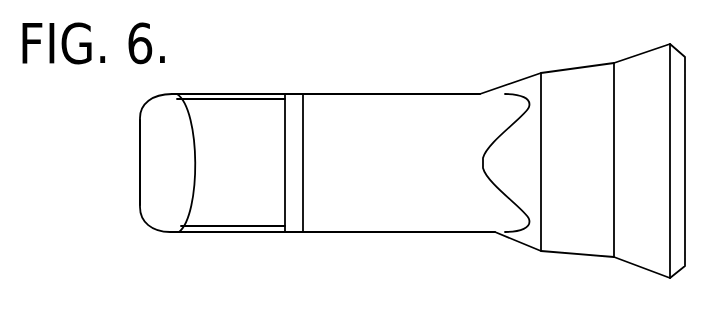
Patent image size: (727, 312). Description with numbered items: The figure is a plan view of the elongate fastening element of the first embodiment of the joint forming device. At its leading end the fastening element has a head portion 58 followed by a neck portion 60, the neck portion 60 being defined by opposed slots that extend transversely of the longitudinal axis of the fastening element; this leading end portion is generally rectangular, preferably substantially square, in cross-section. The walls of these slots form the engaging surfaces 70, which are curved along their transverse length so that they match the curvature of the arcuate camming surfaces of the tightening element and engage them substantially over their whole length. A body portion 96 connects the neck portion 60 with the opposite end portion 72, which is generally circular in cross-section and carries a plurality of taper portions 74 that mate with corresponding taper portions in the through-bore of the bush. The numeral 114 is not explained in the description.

The head portion 58 is at (163, 170).
The neck portion 60 is at (265, 140).
The engaging surfaces 70 is at (195, 147).
The end portion 72 is at (580, 174).
The taper portions 74 is at (640, 77).
The body portion 96 is at (400, 147).
The end wall 114 is at (140, 160).